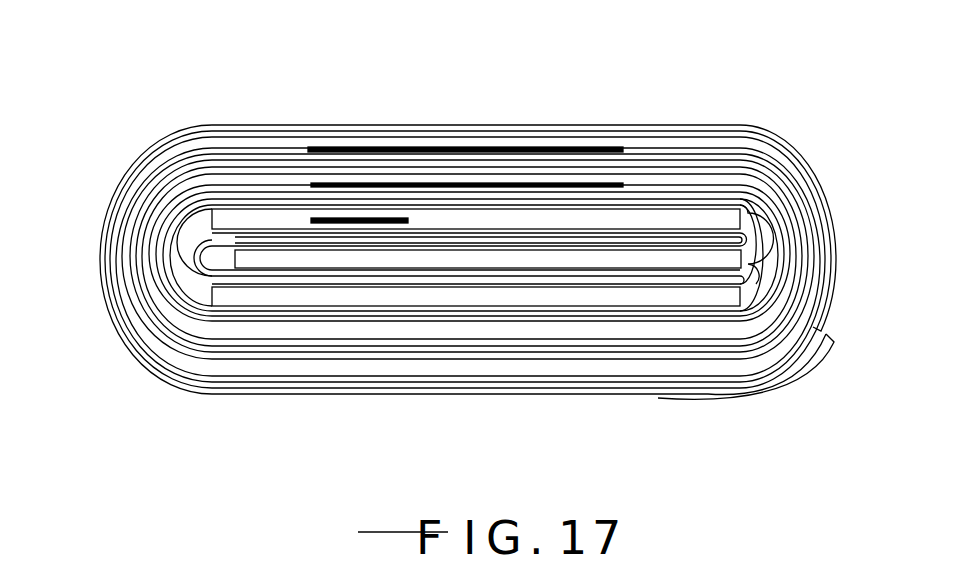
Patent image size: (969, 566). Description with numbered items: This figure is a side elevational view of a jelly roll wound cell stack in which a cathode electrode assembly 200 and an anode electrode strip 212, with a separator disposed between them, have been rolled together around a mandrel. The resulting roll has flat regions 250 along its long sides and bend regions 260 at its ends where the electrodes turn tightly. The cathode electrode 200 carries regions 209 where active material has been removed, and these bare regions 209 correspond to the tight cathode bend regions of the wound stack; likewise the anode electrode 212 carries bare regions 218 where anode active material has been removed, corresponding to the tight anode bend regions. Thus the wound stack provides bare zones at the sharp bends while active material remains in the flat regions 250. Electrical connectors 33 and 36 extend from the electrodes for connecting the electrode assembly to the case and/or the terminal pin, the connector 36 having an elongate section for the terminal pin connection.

The electrical connector 33 is at (376, 175).
The electrical connector 36 is at (345, 137).
The cathode electrode assembly 200 is at (664, 148).
The regions where active material has been removed 209 is at (183, 283).
The anode electrode strip 212 is at (528, 381).
The bare regions 218 is at (196, 247).
The flat regions 250 is at (605, 100).
The bend regions 260 is at (844, 222).